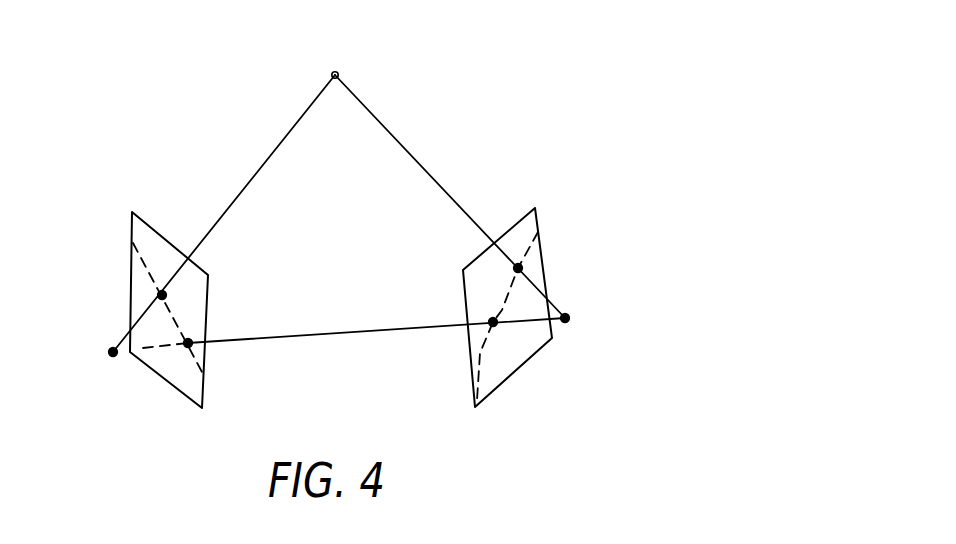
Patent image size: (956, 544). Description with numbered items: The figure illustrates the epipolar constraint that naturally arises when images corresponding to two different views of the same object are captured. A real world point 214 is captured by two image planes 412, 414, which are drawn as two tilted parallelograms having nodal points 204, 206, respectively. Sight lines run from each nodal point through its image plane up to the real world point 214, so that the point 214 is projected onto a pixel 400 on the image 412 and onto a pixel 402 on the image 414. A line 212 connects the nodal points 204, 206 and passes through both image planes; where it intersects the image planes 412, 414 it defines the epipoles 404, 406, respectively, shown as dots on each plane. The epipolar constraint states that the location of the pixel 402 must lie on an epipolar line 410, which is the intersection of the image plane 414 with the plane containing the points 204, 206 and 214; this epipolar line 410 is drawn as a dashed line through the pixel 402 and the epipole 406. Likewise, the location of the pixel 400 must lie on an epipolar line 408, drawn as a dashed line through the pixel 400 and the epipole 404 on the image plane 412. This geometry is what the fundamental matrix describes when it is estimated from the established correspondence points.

The nodal point 204 is at (110, 353).
The nodal point 206 is at (568, 318).
The line 212 is at (358, 333).
The real world point 214 is at (338, 72).
The pixel 400 is at (163, 291).
The pixel 402 is at (518, 264).
The epipole 404 is at (191, 339).
The epipole 406 is at (490, 321).
The epipolar line 408 is at (147, 272).
The epipolar line 410 is at (508, 290).
The image plane 412 is at (178, 380).
The image plane 414 is at (523, 347).